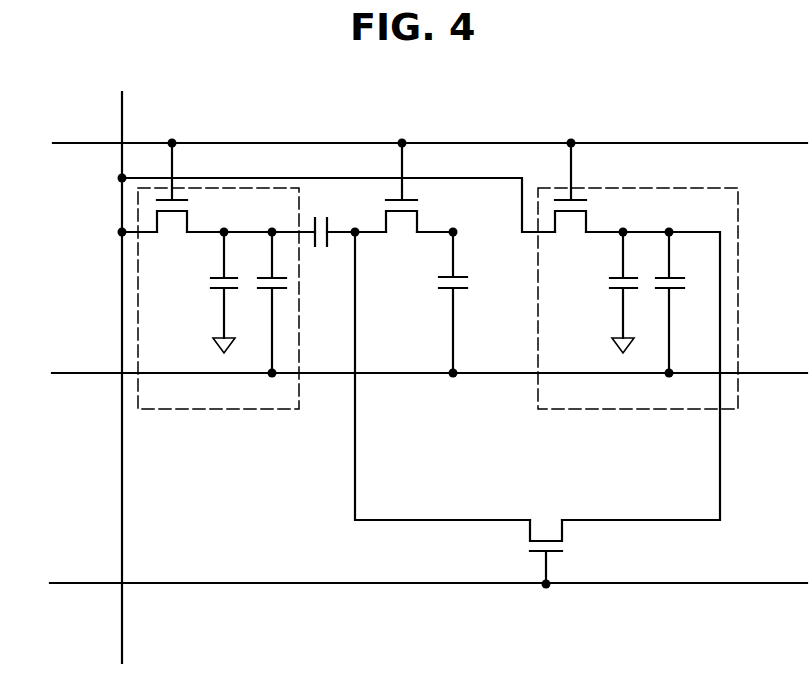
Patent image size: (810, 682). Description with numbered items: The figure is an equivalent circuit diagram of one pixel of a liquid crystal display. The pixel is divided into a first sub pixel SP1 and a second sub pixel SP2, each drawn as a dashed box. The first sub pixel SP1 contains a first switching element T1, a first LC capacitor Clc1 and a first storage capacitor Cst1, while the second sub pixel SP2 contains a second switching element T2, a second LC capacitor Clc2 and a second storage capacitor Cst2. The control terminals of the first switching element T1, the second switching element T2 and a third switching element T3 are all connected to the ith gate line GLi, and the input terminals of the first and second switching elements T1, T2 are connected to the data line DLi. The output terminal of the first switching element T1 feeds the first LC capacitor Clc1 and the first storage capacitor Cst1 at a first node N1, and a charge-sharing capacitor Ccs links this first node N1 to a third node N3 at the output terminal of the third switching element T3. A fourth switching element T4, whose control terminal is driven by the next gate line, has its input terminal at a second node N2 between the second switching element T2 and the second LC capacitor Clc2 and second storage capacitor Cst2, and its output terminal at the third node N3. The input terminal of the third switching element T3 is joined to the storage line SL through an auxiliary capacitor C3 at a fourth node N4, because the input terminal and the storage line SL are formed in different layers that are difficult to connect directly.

The data line DLi is at (121, 367).
The ith gate line GLi is at (412, 142).
The storage line SL is at (415, 372).
The first switching element T1 is at (172, 195).
The second switching element T2 is at (570, 195).
The third switching element T3 is at (401, 195).
The fourth switching element T4 is at (546, 541).
The first node N1 is at (222, 221).
The second node N2 is at (621, 221).
The third node N3 is at (354, 221).
The fourth node N4 is at (451, 221).
The first LC capacitor Clc1 is at (206, 292).
The first storage capacitor Cst1 is at (287, 301).
The charge-sharing capacitor Ccs is at (318, 221).
The auxiliary capacitor C3 is at (464, 302).
The second LC capacitor Clc2 is at (605, 292).
The second storage capacitor Cst2 is at (685, 301).
The first sub pixel SP1 is at (166, 410).
The second sub pixel SP2 is at (618, 410).